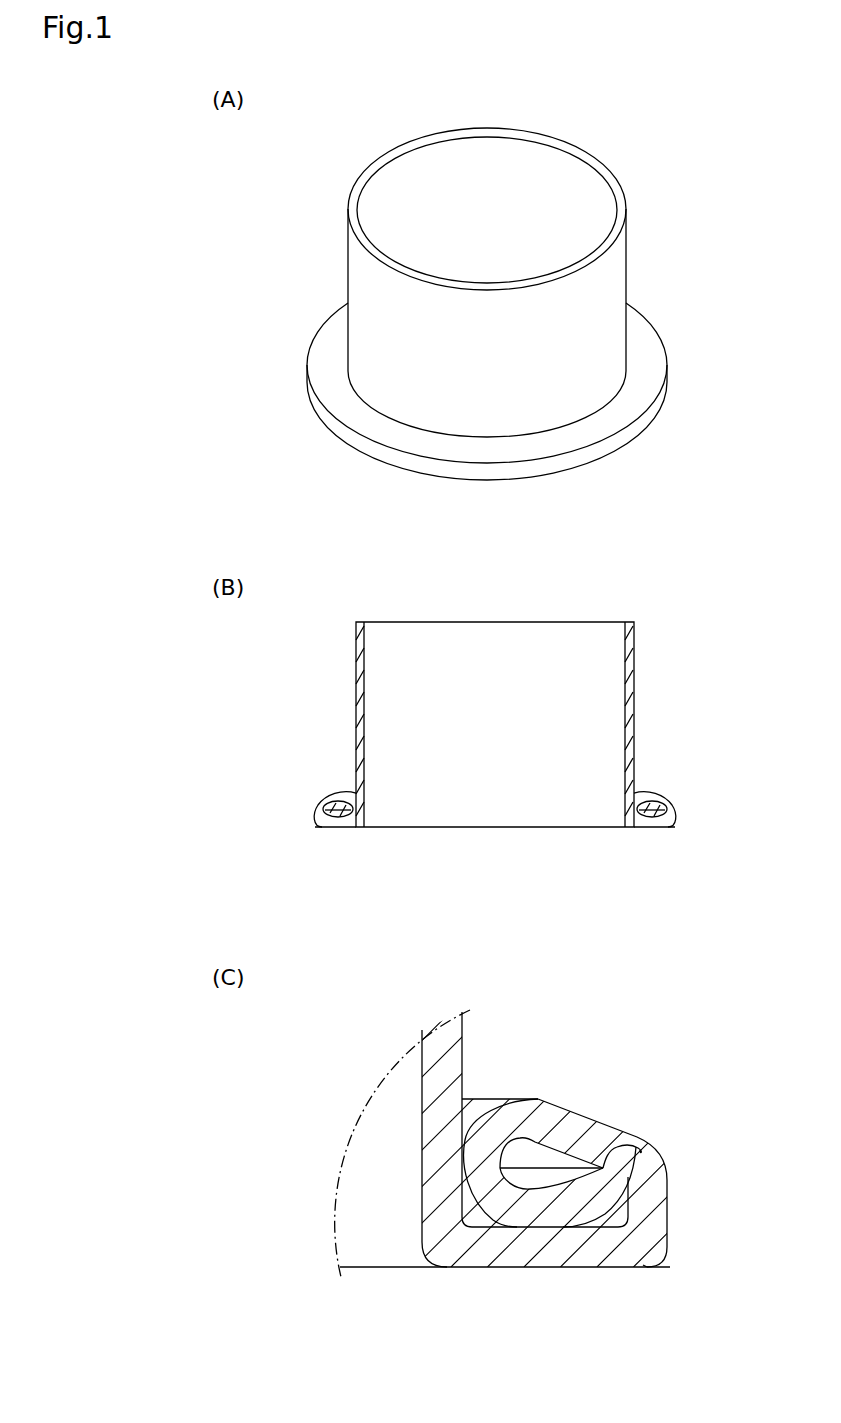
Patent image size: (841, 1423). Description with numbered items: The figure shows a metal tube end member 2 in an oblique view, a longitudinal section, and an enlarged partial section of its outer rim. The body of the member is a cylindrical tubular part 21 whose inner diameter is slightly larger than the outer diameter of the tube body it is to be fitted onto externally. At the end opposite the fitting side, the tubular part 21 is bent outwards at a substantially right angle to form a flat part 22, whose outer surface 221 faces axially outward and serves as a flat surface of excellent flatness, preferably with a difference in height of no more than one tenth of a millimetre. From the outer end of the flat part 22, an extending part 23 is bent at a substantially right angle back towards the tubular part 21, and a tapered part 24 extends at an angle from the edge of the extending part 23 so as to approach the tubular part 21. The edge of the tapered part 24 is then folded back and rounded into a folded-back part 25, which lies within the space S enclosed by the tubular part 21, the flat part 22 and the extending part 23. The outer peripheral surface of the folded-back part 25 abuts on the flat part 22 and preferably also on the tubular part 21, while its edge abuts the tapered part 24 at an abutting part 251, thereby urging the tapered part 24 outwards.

The tube end member 2 is at (633, 213).
The tubular part 21 is at (628, 270).
The flat part 22 is at (648, 828).
The outer surface 221 is at (502, 1268).
The extending part 23 is at (625, 435).
The tapered part 24 is at (325, 352).
The folded-back part 25 is at (640, 824).
The abutting part 251 is at (640, 1147).
The space S is at (643, 1265).